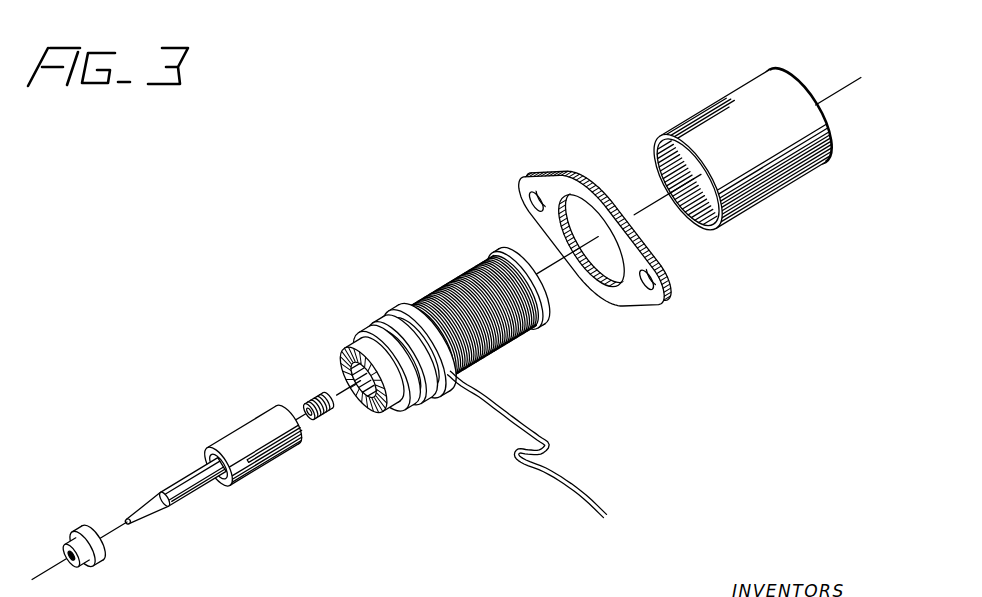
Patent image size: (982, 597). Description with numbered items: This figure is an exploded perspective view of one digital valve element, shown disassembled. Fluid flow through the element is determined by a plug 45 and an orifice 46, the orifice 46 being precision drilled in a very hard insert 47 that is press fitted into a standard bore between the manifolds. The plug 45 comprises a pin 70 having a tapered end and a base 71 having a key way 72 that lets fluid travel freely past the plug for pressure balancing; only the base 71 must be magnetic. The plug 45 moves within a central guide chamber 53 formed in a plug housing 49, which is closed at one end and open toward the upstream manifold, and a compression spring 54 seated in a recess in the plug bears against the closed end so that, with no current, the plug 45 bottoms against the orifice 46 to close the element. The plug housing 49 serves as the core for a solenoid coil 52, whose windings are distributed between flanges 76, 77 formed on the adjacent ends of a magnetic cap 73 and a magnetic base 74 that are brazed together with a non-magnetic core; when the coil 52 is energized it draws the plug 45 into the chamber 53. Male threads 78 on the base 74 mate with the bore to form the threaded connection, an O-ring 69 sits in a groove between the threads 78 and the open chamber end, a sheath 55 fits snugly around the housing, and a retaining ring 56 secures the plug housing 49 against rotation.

The plug 45 is at (215, 465).
The orifice 46 is at (72, 555).
The insert 47 is at (78, 533).
The plug housing 49 is at (436, 342).
The solenoid coil 52 is at (462, 276).
The central guide chamber 53 is at (362, 396).
The compression spring 54 is at (322, 418).
The sheath 55 is at (729, 112).
The retaining ring 56 is at (600, 183).
The O-ring 69 is at (395, 400).
The pin 70 is at (198, 492).
The base 71 is at (253, 442).
The key way 72 is at (263, 468).
The cap 73 is at (490, 246).
The base 74 is at (352, 367).
The flange 76 is at (509, 289).
The flange 77 is at (436, 400).
The male threads 78 is at (381, 306).